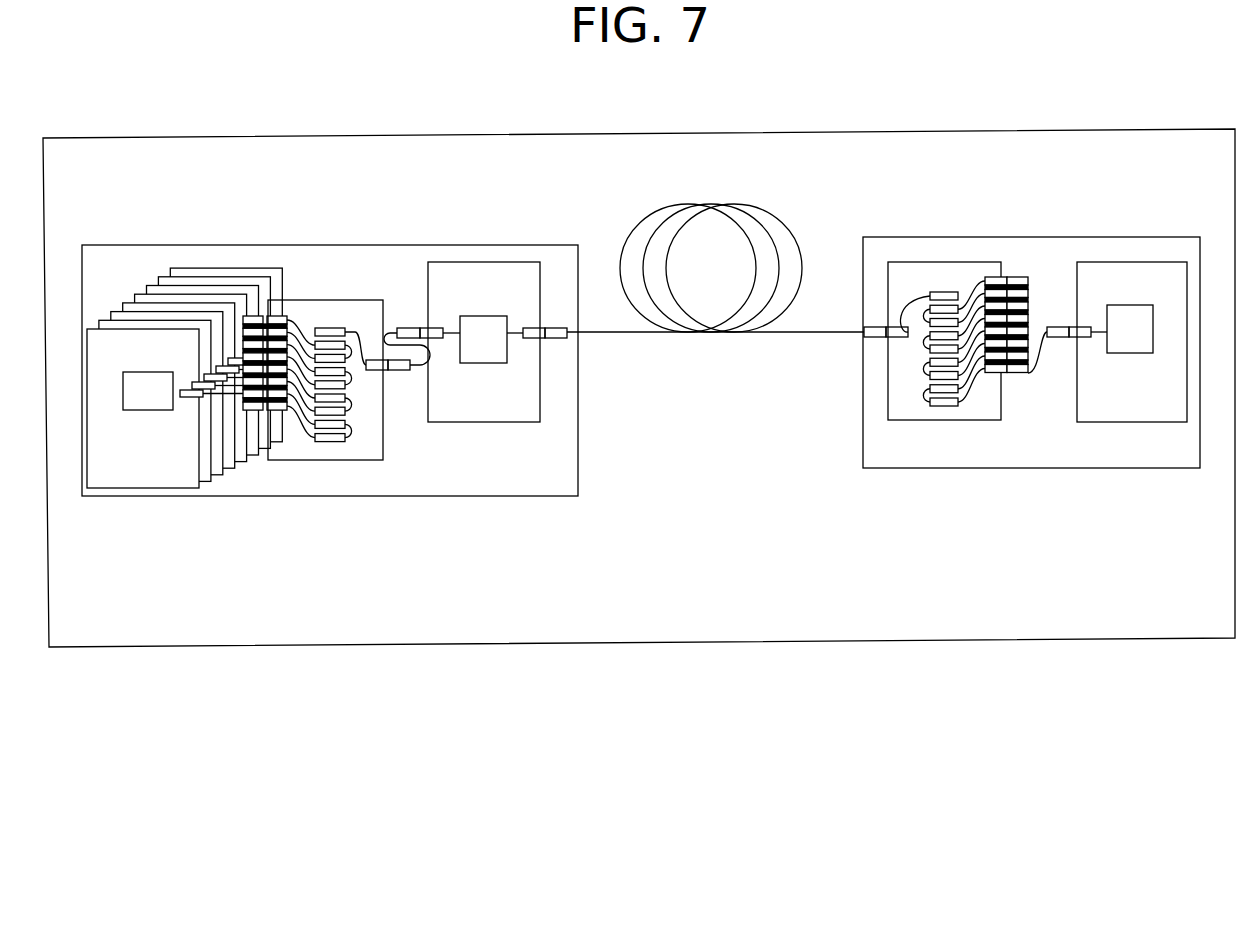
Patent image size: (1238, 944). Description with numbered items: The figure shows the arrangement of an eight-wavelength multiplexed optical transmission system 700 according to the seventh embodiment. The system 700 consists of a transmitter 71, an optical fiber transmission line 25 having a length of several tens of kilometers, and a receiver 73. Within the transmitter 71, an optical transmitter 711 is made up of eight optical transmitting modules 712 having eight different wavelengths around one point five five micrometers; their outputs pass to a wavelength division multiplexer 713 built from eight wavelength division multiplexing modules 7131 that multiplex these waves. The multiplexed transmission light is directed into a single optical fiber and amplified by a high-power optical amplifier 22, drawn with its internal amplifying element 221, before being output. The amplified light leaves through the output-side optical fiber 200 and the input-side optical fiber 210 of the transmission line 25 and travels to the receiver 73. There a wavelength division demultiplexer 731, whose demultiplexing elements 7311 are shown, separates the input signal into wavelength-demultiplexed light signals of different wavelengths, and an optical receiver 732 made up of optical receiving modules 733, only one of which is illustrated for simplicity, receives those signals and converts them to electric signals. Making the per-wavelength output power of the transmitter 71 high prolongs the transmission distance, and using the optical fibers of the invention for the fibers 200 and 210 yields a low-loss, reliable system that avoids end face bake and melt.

The optical transmission system 700 is at (1067, 129).
The transmitter 71 is at (357, 252).
The optical transmitter 711 is at (147, 480).
The optical transmitting module 712 is at (148, 372).
The wavelength division multiplexer 713 is at (298, 460).
The wavelength division multiplexing module 7131 is at (340, 442).
The high-power optical amplifier 22 is at (483, 418).
The optical multiplexer 221 is at (493, 316).
The output-side optical fiber 200 is at (533, 340).
The input-side optical fiber 210 is at (560, 340).
The optical fiber transmission line 25 is at (737, 205).
The receiver 73 is at (983, 247).
The wavelength division demultiplexer 731 is at (988, 422).
The opto-electrical conversion elements 7311 is at (940, 407).
The optical receiver 732 is at (1157, 422).
The optical receiving module 733 is at (1127, 250).